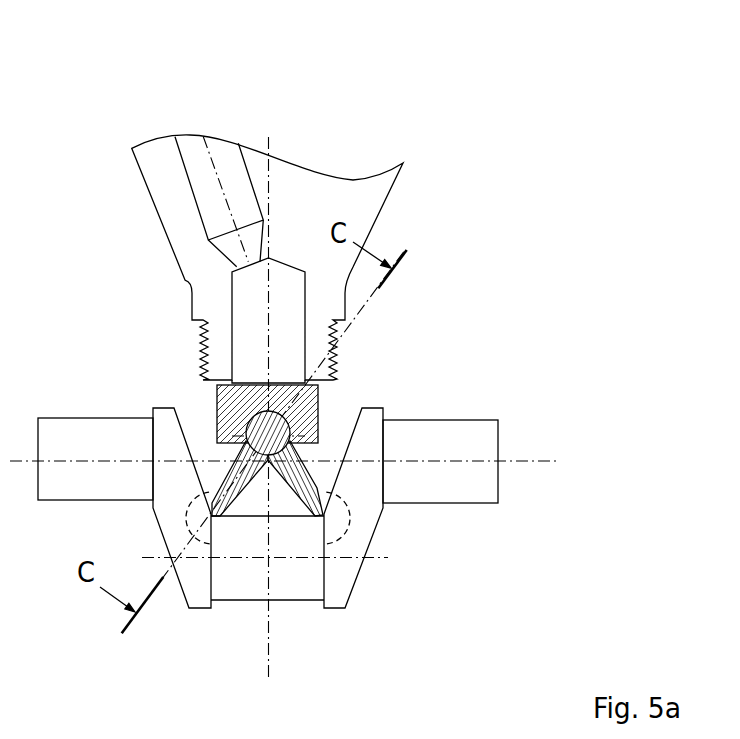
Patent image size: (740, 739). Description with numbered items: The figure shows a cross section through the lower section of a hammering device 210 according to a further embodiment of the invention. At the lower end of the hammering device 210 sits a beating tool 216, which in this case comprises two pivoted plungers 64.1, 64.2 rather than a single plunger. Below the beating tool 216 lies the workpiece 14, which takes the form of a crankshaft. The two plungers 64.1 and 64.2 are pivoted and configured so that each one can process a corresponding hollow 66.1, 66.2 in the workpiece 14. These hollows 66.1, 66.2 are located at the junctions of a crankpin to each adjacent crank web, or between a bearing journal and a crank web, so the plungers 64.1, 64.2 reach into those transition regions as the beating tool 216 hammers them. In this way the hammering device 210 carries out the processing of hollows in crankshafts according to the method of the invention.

The hammering device 210 is at (341, 105).
The beating tool 216 is at (382, 350).
The pivoted plunger 64.1 is at (306, 475).
The pivoted plunger 64.2 is at (243, 477).
The hollow 66.1 is at (344, 516).
The hollow 66.2 is at (190, 516).
The workpiece 14 is at (343, 585).